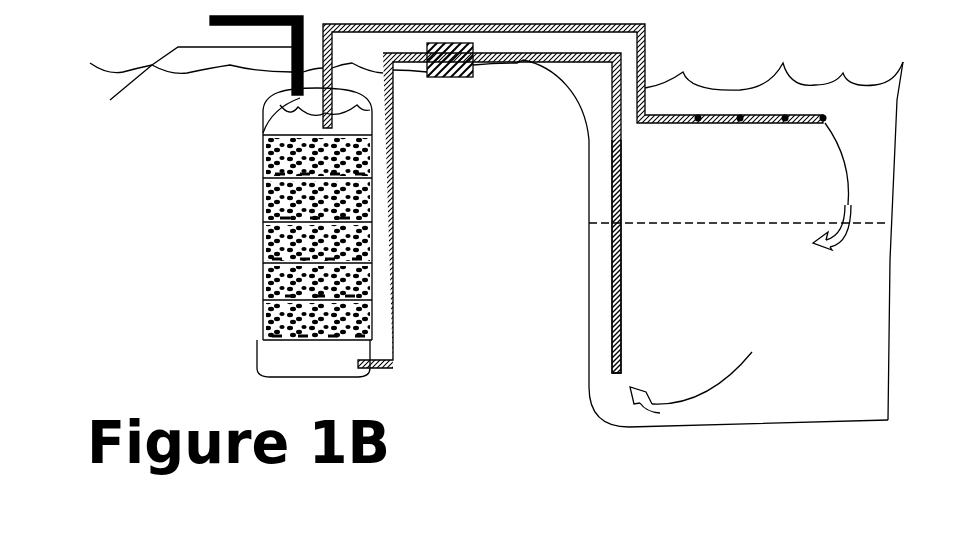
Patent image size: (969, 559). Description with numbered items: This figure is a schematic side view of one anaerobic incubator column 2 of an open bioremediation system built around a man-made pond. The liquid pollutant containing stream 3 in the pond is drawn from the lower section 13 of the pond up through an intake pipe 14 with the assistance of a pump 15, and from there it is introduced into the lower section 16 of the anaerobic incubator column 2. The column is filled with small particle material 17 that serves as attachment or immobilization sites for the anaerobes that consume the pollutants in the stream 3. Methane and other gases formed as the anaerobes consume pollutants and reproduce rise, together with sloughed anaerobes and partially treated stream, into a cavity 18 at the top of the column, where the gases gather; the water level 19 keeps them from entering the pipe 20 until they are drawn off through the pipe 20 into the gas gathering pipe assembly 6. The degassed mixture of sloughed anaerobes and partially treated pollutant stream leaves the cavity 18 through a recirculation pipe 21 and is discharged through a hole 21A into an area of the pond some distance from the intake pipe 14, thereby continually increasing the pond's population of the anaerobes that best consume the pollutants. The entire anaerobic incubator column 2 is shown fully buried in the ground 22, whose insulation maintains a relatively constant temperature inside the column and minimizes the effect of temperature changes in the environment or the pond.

The anaerobic incubator column 2 is at (258, 188).
The liquid pollutant containing stream 3 is at (852, 166).
The gathering pipe assembly 6 is at (205, 22).
The lower section of the pond 13 is at (713, 243).
The intake pipe 14 is at (625, 303).
The pump 15 is at (453, 77).
The lower section of the anaerobic incubator column 16 is at (280, 360).
The small particle material 17 is at (285, 322).
The cavity 18 is at (283, 99).
The water level 19 is at (263, 135).
The pipe 20 is at (167, 94).
The recirculation pipe 21 is at (650, 25).
The hole 21A is at (823, 121).
The ground 22 is at (489, 213).